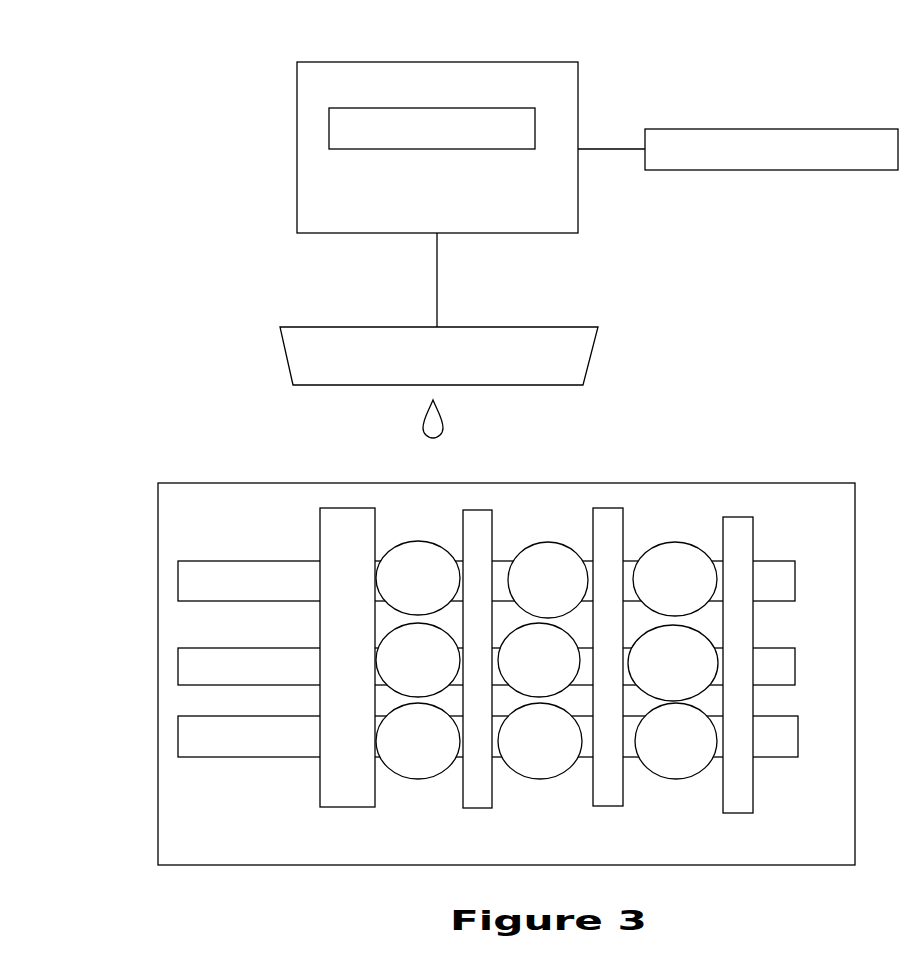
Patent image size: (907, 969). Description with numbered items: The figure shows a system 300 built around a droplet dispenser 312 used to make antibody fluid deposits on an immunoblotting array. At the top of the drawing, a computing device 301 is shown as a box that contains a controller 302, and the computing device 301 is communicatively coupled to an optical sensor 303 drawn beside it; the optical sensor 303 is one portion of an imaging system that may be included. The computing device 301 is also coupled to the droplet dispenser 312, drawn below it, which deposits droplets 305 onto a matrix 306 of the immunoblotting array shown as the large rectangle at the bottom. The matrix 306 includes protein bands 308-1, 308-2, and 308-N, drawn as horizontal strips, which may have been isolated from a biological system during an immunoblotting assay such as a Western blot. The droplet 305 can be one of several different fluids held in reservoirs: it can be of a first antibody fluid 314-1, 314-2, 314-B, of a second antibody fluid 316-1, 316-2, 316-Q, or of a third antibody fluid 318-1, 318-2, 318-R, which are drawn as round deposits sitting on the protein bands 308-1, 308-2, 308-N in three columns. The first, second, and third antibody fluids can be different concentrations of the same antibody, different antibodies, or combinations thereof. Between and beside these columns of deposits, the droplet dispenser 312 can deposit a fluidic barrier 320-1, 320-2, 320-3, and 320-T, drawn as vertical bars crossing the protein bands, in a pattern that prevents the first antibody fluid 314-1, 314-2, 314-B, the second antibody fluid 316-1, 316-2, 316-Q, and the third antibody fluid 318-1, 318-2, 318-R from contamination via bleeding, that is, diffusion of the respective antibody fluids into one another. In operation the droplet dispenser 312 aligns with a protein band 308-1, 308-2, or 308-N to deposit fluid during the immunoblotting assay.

The system 300 is at (163, 75).
The computing device 301 is at (565, 101).
The controller 302 is at (525, 141).
The optical sensor 303 is at (888, 163).
The droplet 305 is at (424, 430).
The matrix 306 is at (823, 817).
The protein band 308-1 is at (190, 580).
The protein band 308-2 is at (190, 666).
The protein band 308-N is at (190, 737).
The droplet dispenser 312 is at (592, 356).
The first antibody fluid 314-1 is at (445, 592).
The first antibody fluid 314-2 is at (445, 674).
The first antibody fluid 314-B is at (445, 755).
The second antibody fluid 316-1 is at (575, 594).
The second antibody fluid 316-2 is at (566, 674).
The second antibody fluid 316-Q is at (568, 755).
The third antibody fluid 318-1 is at (702, 593).
The third antibody fluid 318-2 is at (700, 676).
The third antibody fluid 318-R is at (704, 755).
The fluidic barrier 320-1 is at (347, 797).
The fluidic barrier 320-2 is at (477, 797).
The fluidic barrier 320-3 is at (607, 797).
The fluidic barrier 320-T is at (738, 797).